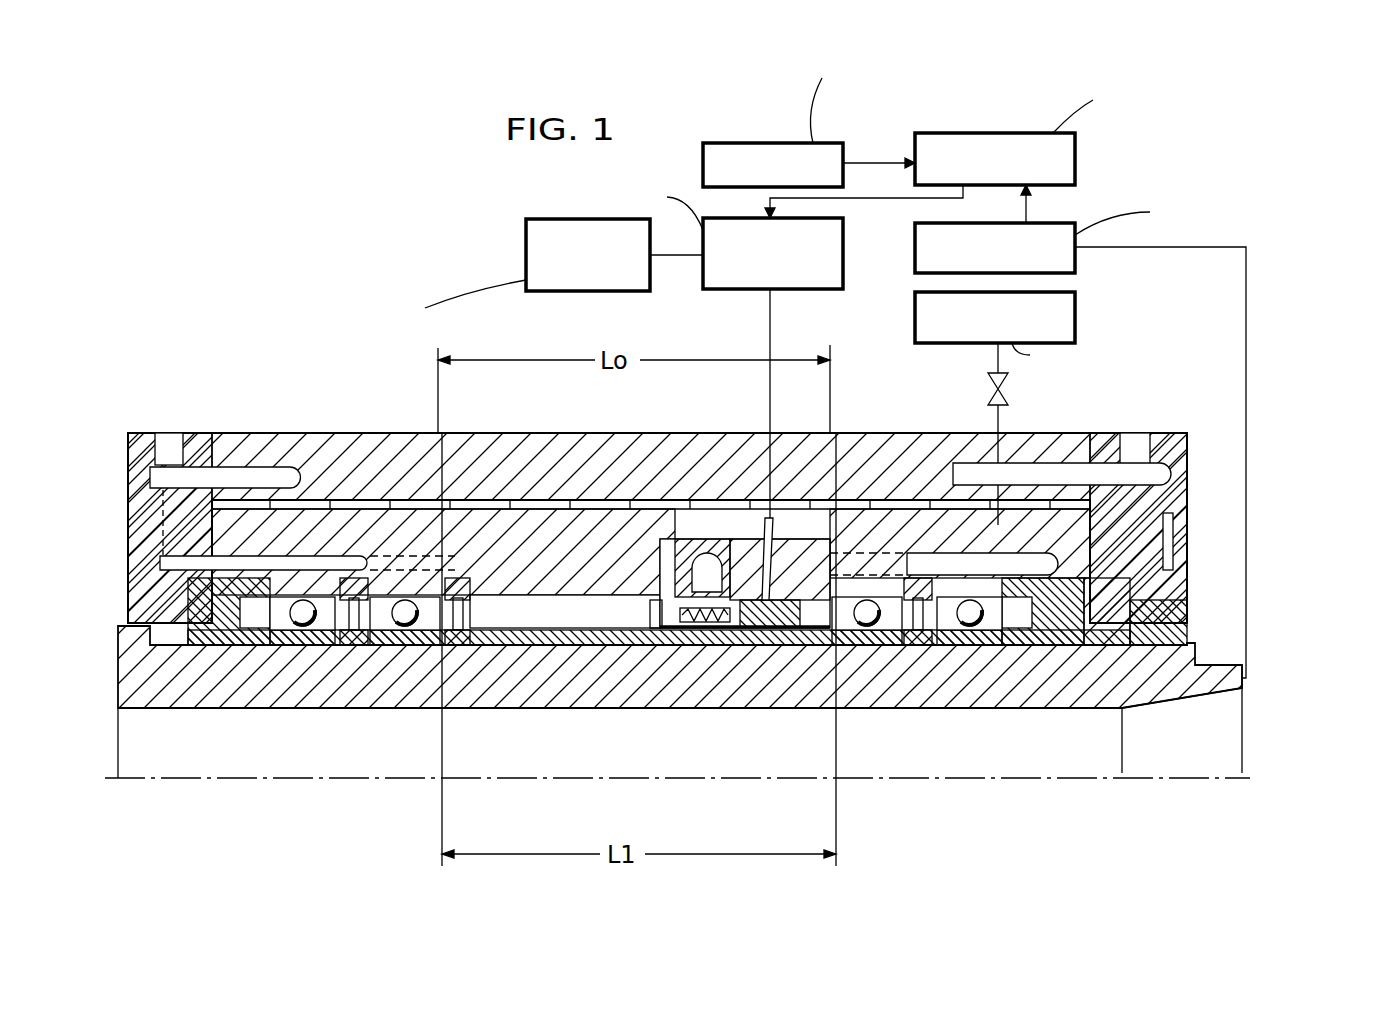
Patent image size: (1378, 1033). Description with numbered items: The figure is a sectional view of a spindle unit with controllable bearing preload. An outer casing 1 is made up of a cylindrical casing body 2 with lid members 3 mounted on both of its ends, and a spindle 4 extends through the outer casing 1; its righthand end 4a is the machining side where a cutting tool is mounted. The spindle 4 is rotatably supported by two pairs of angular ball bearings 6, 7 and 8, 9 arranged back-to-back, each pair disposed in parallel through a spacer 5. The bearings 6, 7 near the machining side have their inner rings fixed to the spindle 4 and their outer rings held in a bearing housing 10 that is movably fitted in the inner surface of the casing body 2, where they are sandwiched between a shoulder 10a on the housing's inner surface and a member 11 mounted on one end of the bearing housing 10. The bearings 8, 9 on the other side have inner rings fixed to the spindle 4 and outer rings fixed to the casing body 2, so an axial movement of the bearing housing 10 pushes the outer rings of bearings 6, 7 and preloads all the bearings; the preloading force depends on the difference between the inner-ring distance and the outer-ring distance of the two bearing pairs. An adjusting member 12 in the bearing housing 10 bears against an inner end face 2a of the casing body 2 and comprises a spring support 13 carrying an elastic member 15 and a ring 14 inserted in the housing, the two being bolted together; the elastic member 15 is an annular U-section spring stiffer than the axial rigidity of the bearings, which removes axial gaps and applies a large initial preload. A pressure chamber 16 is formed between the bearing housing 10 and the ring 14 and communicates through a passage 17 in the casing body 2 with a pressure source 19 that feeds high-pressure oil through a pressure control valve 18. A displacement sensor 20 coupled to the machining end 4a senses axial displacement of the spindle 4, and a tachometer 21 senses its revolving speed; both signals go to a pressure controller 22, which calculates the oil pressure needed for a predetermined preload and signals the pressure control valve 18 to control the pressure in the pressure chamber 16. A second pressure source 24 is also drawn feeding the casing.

The outer casing 1 is at (483, 432).
The casing body 2 is at (500, 537).
The inner end face 2a is at (687, 537).
The lid members 3 is at (148, 445).
The spindle 4 is at (252, 690).
The righthand end of the spindle 4a is at (1245, 740).
The spacer 5 is at (352, 642).
The angular ball bearing 6 is at (872, 645).
The angular ball bearing 7 is at (987, 645).
The angular ball bearing 8 is at (303, 645).
The angular ball bearing 9 is at (399, 645).
The bearing housing 10 is at (865, 530).
The shoulder 10a is at (803, 630).
The member 11 is at (1080, 585).
The adjusting member 12 is at (652, 634).
The spring support 13 is at (690, 633).
The ring 14 is at (723, 628).
The elastic member 15 is at (718, 537).
The pressure chamber 16 is at (748, 628).
The passage 17 is at (793, 520).
The pressure control valve 18 is at (843, 252).
The pressure source 19 is at (526, 251).
The displacement sensor 20 is at (1057, 223).
The tachometer 21 is at (806, 143).
The pressure controller 22 is at (1028, 133).
The pressure source 24 is at (1075, 322).